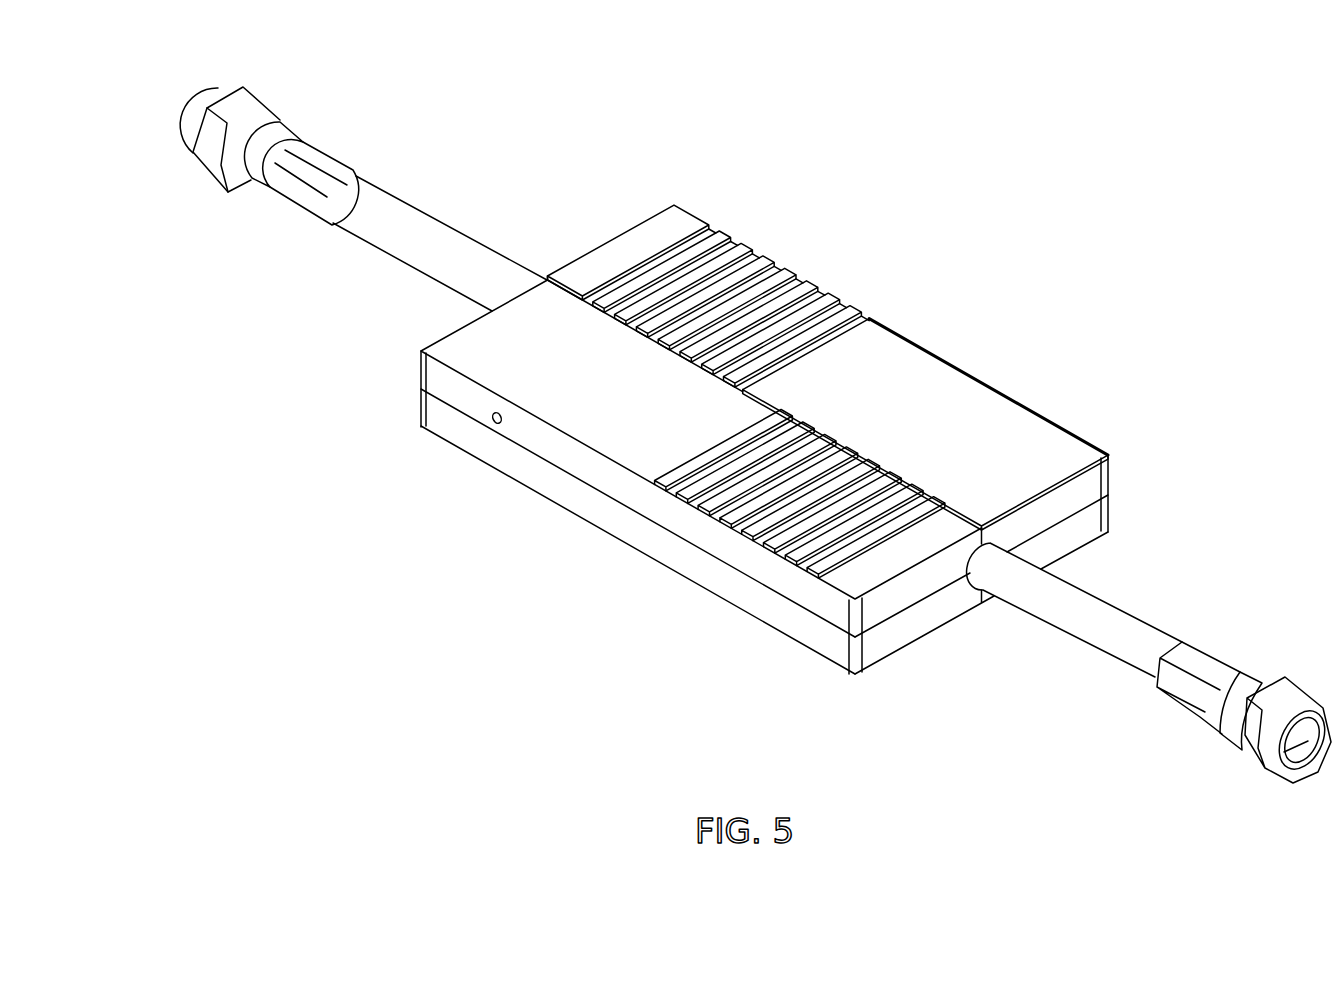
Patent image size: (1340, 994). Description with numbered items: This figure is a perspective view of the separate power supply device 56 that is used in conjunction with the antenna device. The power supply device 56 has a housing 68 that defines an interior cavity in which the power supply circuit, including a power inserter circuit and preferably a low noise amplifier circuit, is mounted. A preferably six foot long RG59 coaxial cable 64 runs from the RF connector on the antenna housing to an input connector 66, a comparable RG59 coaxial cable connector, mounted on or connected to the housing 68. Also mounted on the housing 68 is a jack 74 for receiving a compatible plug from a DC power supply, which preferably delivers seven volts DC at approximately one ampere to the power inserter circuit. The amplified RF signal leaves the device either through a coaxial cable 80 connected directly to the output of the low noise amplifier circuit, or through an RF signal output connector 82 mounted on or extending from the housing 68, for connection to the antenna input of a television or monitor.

The power supply device 56 is at (960, 247).
The RG59 coaxial cable 64 is at (446, 230).
The input connector 66 is at (257, 99).
The housing 68 is at (1028, 408).
The jack 74 is at (492, 419).
The coaxial cable 80 is at (1128, 618).
The RF signal output connector 82 is at (1263, 772).